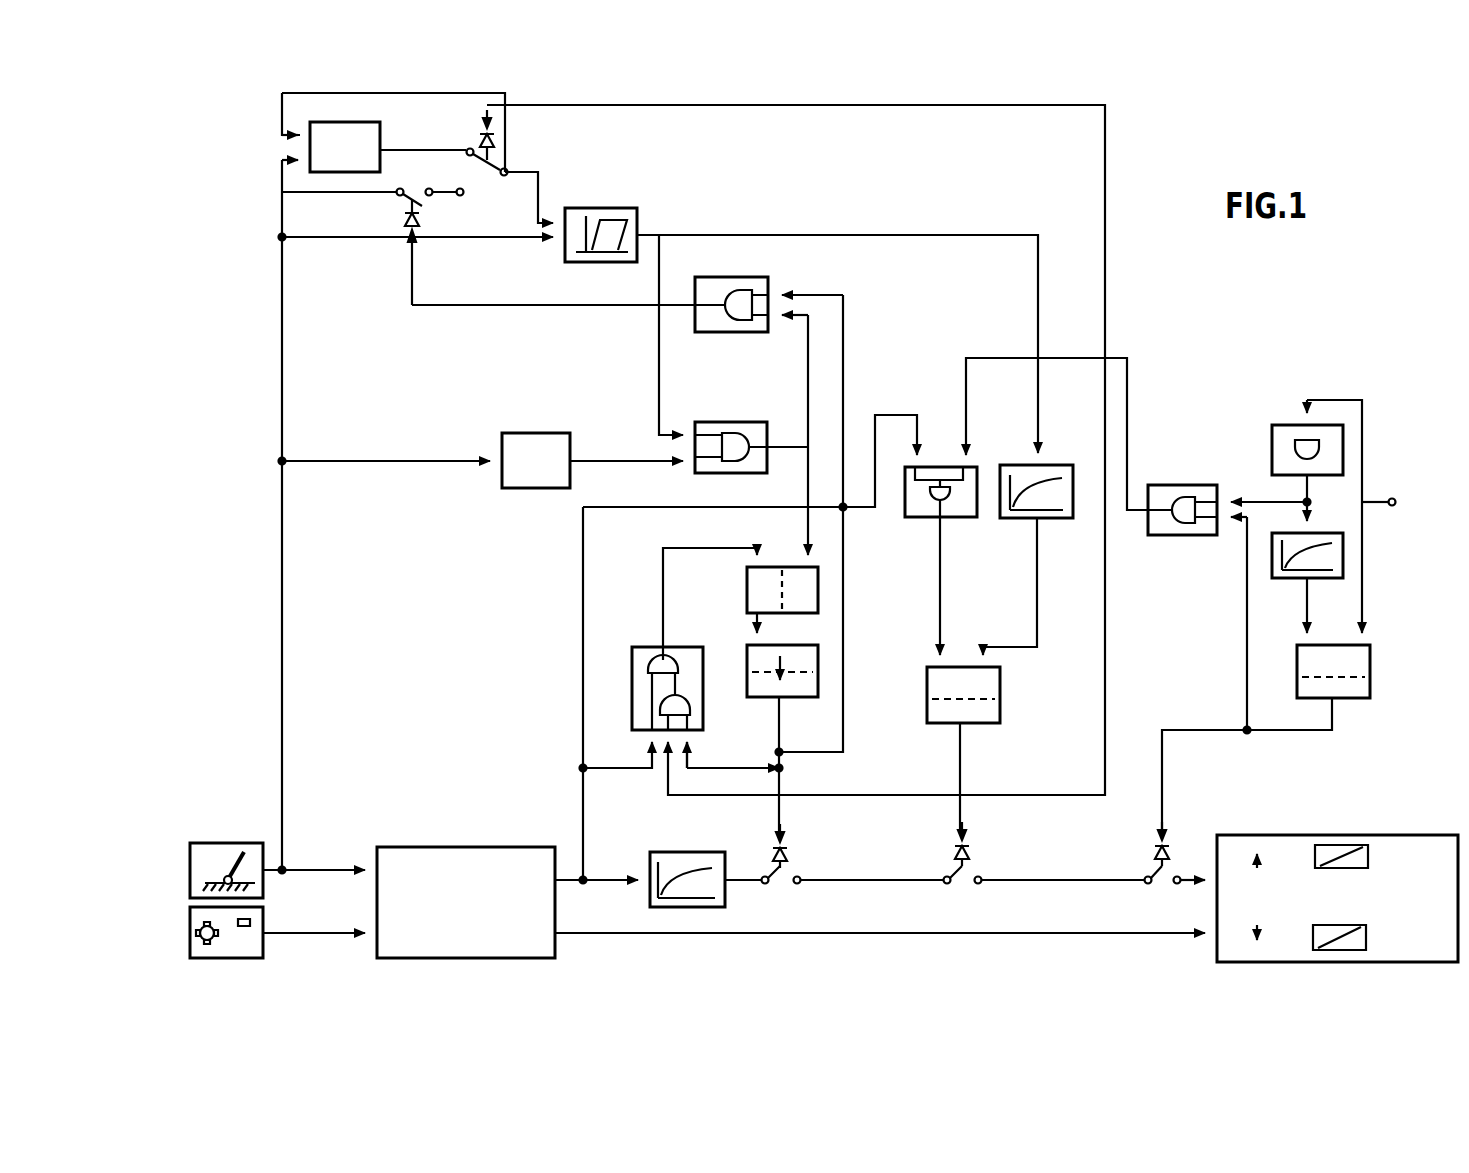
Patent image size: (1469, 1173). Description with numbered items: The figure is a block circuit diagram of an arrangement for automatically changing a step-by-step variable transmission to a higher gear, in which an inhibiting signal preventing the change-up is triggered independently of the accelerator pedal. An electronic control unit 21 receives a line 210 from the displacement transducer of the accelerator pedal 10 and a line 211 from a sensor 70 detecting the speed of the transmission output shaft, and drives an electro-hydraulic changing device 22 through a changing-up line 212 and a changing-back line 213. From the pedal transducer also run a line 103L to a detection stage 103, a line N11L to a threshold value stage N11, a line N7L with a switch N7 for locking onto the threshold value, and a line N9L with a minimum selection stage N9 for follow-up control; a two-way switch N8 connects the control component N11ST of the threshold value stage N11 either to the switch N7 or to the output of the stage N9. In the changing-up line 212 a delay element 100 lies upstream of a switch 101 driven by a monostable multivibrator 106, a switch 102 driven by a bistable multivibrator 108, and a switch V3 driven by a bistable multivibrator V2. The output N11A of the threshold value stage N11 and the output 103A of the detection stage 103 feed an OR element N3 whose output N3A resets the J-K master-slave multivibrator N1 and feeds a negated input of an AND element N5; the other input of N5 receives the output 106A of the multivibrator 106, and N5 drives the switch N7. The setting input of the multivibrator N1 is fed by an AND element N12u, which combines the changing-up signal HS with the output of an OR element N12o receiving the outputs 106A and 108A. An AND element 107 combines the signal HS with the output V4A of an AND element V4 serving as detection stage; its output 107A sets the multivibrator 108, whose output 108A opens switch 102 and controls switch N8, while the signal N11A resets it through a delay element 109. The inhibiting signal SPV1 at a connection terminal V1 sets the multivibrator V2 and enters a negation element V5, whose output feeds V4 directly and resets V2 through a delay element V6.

The minimum selection stage N9 is at (300, 138).
The line N9L is at (460, 145).
The two-way switch N8 is at (492, 188).
The switch N7 is at (396, 180).
The line N7L is at (310, 199).
The threshold value stage N11 is at (637, 225).
The control component of the threshold value stage N11ST is at (594, 203).
The line N11L is at (952, 230).
The output of the threshold value stage N11A is at (680, 434).
The AND element N5 is at (715, 285).
The OR element N3 is at (777, 427).
The output of the OR element N3A is at (805, 545).
The detection stage 103 is at (505, 487).
The line 103L is at (380, 458).
The output of the detection stage 103A is at (677, 460).
The changing-up signal HS is at (916, 423).
The J-K master-slave multivibrator N1 is at (752, 582).
The monostable multivibrator 106 is at (800, 690).
The AND element N12u is at (648, 652).
The OR element N12o is at (700, 700).
The output of the AND element V4 V4A is at (966, 380).
The AND element 107 is at (922, 518).
The output of the AND element 107 107A is at (936, 658).
The delay element 109 is at (1053, 473).
The bistable multivibrator 108 is at (1004, 704).
The AND element V4 is at (1167, 537).
The negation element V5 is at (1272, 450).
The inhibiting signal SPV1 is at (1307, 400).
The connection terminal V1 is at (1393, 507).
The delay element V6 is at (1287, 578).
The bistable multivibrator V2 is at (1345, 700).
The accelerator pedal 10 is at (190, 853).
The sensor 70 is at (193, 915).
The line 210 is at (358, 843).
The line 211 is at (345, 932).
The electronic control unit 21 is at (468, 850).
The delay element 100 is at (675, 850).
The changing-up line 212 is at (747, 868).
The switch 101 is at (782, 877).
The output of the monostable multivibrator 106A is at (782, 808).
The switch 102 is at (963, 887).
The output of the bistable multivibrator 108A is at (962, 817).
The switch V3 is at (1160, 880).
The changing-back line 213 is at (712, 937).
The electro-hydraulic changing device 22 is at (1300, 848).